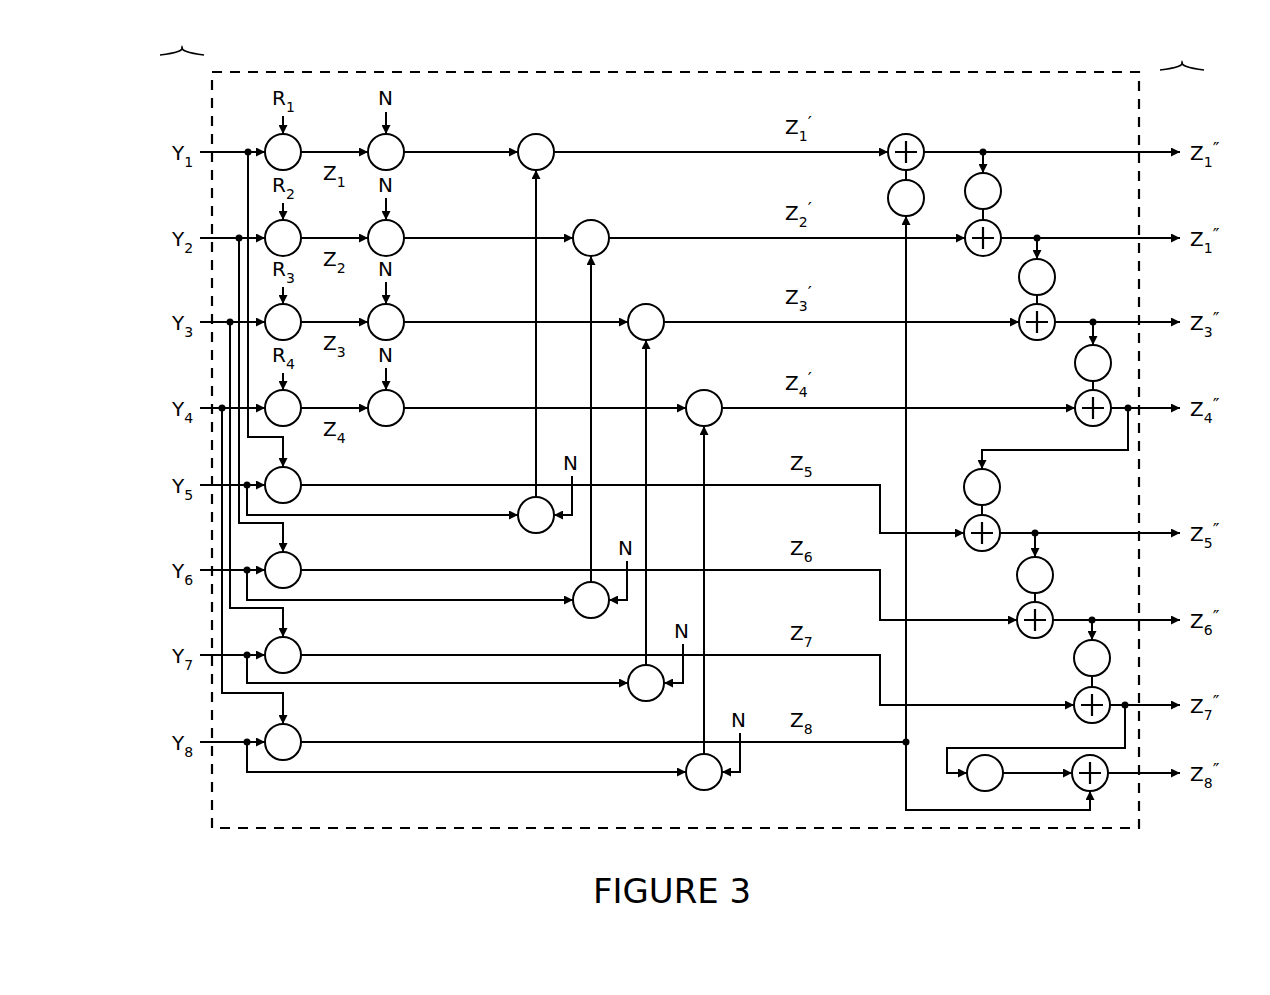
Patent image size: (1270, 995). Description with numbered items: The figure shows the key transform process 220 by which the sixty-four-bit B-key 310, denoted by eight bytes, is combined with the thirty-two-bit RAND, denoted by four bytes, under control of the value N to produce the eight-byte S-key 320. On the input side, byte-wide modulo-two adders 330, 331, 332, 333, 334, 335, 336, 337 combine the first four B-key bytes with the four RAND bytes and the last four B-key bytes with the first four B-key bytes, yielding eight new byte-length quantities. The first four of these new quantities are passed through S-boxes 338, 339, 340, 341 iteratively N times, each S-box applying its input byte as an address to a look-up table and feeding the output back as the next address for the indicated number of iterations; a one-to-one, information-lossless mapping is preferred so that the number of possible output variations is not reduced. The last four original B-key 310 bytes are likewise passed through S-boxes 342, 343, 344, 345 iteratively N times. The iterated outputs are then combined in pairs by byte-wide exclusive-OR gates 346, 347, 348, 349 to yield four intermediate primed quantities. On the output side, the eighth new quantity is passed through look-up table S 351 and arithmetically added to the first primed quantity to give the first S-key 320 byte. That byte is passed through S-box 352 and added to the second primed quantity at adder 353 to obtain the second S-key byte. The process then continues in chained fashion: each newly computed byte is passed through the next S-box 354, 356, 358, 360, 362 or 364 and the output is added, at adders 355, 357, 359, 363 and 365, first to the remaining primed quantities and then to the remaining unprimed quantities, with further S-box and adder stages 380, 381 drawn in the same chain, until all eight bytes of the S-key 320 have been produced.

The B-key 310 is at (182, 40).
The S-key 320 is at (1182, 54).
The key transform process 220 is at (337, 832).
The byte-wide modulo-2 adder 330 is at (299, 146).
The byte-wide modulo-2 adder 331 is at (299, 232).
The byte-wide modulo-2 adder 332 is at (299, 316).
The byte-wide modulo-2 adder 333 is at (299, 402).
The byte-wide modulo-2 adder 334 is at (299, 479).
The byte-wide modulo-2 adder 335 is at (299, 564).
The byte-wide modulo-2 adder 336 is at (299, 649).
The byte-wide modulo-2 adder 337 is at (299, 736).
The S-box 338 is at (402, 146).
The S-box 339 is at (402, 232).
The S-box 340 is at (402, 316).
The S-box 341 is at (402, 402).
The S-box 342 is at (522, 527).
The S-box 343 is at (577, 612).
The S-box 344 is at (632, 695).
The S-box 345 is at (690, 784).
The byte-wide exclusive-OR gate 346 is at (552, 146).
The byte-wide exclusive-OR gate 347 is at (607, 232).
The byte-wide exclusive-OR gate 348 is at (662, 316).
The byte-wide exclusive-OR gate 349 is at (720, 402).
The look-up table S 351 is at (888, 205).
The S-box 352 is at (996, 180).
The adder 353 is at (984, 256).
The S-box 354 is at (1050, 266).
The adder 355 is at (1036, 340).
The S-box 356 is at (1078, 354).
The adder 357 is at (1086, 424).
The S-box 358 is at (995, 476).
The adder 359 is at (983, 552).
The S-box 360 is at (922, 146).
The S-box 362 is at (1074, 650).
The adder 363 is at (1094, 723).
The S-box 364 is at (978, 790).
The adder 365 is at (1083, 790).
The scaler 380 is at (1048, 564).
The adder 381 is at (1034, 638).